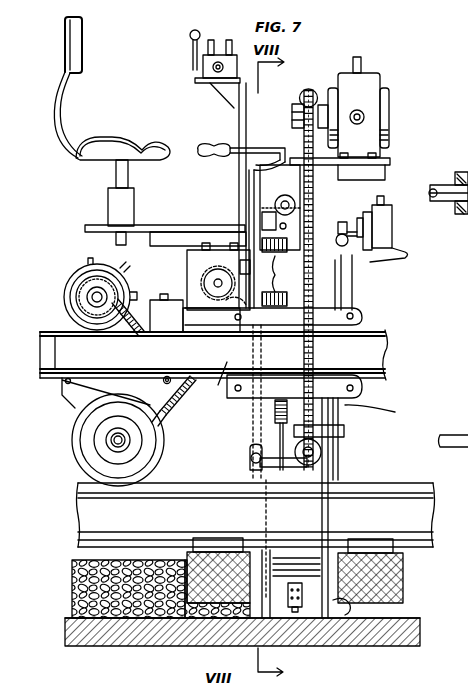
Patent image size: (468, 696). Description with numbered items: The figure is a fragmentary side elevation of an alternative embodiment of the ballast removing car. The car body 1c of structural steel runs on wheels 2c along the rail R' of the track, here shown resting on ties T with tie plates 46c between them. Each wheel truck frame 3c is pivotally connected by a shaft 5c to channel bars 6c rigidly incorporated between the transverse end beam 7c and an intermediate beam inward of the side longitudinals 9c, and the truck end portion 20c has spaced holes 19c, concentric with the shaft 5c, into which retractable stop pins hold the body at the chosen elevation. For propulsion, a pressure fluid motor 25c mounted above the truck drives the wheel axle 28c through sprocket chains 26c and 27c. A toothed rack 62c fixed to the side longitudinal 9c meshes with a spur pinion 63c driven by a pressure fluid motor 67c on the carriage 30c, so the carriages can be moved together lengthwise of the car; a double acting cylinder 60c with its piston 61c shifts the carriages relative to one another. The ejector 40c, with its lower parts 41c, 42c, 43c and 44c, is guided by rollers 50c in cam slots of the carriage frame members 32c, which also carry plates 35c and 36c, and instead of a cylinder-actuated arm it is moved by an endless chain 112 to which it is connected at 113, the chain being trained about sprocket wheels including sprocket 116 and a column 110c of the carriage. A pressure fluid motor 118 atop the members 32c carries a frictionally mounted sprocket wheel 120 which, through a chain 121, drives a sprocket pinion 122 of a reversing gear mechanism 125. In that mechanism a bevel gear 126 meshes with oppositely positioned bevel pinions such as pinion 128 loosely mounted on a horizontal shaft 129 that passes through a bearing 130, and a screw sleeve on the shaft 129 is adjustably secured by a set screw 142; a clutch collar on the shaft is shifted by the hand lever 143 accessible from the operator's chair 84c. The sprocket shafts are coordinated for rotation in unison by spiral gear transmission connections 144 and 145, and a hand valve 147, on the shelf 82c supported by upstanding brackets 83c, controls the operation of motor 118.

The operator's chair 84c is at (105, 145).
The hand valve 147 is at (193, 58).
The shelf 82c is at (212, 82).
The upstanding bracket 83c is at (239, 119).
The hand lever 143 is at (212, 148).
The reversing gear mechanism 125 is at (284, 148).
The bevel gear 126 is at (262, 180).
The bevel pinion 128 is at (266, 195).
The horizontal shaft 129 is at (258, 206).
The bearing 130 is at (265, 222).
The spur pinion 63c is at (225, 275).
The pressure fluid motor 67c is at (190, 258).
The toothed rack 62c is at (183, 300).
The pressure fluid motor 25c is at (75, 278).
The sprocket chain 26c is at (66, 308).
The spiral gear transmission connection 144 is at (211, 320).
The frame member 32c is at (273, 318).
The plate 35c is at (358, 316).
The plate 36c is at (360, 391).
The car body 1c is at (400, 330).
The transverse end beam 7c is at (50, 374).
The hole 19c is at (70, 378).
The shaft 5c is at (166, 376).
The channel bar 6c is at (106, 386).
The wheel truck frame 3c is at (50, 386).
The wheel 2c is at (158, 452).
The wheel axle 28c is at (110, 443).
The side longitudinal 9c is at (212, 382).
The end portion of truck frame 20c is at (182, 398).
The sprocket chain 27c is at (170, 412).
The spiral gear transmission connection 145 is at (262, 410).
The roller 50c is at (248, 470).
The sprocket wheel 116 is at (385, 410).
The ejector connection 113 is at (275, 468).
The sprocket wheel 120 is at (300, 94).
The pressure fluid motor 118 is at (372, 81).
The chain 121 is at (340, 160).
The carriage 30c is at (403, 82).
The piston 61c is at (352, 230).
The double acting pressure fluid cylinder 60c is at (395, 244).
The sprocket pinion 122 is at (405, 262).
The column 110c is at (353, 282).
The endless chain 112 is at (340, 296).
The set screw 142 is at (462, 172).
The ejector 40c is at (360, 432).
The rail R' is at (266, 515).
The tie T is at (190, 562).
The tie plate 46c is at (293, 536).
The clamp 41c is at (300, 478).
The spring 42c is at (325, 550).
The box 44c is at (302, 607).
The hook 43c is at (345, 615).